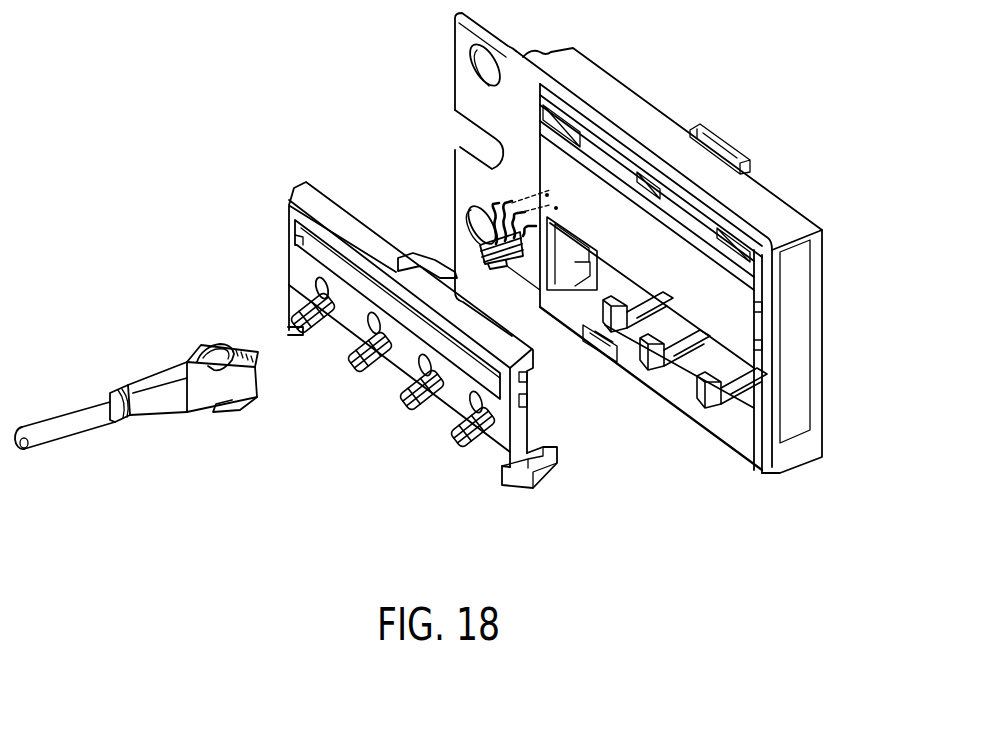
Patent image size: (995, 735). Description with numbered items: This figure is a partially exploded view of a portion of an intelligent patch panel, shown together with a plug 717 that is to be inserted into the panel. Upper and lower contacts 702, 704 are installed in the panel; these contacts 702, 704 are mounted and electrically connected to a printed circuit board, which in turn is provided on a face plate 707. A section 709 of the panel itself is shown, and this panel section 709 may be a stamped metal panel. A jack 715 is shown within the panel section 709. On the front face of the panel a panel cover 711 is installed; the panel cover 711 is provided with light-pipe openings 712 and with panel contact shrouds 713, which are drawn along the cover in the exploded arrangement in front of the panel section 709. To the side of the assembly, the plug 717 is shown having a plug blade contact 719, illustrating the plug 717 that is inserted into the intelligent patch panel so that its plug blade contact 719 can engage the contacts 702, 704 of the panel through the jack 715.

The upper contact 702 is at (486, 250).
The lower contact 704 is at (478, 243).
The face plate 707 is at (750, 447).
The panel section 709 is at (778, 220).
The panel cover 711 is at (297, 196).
The light-pipe opening 712 is at (317, 281).
The panel contact shroud 713 is at (330, 345).
The jack 715 is at (567, 303).
The plug 717 is at (210, 393).
The plug blade contact 719 is at (230, 350).